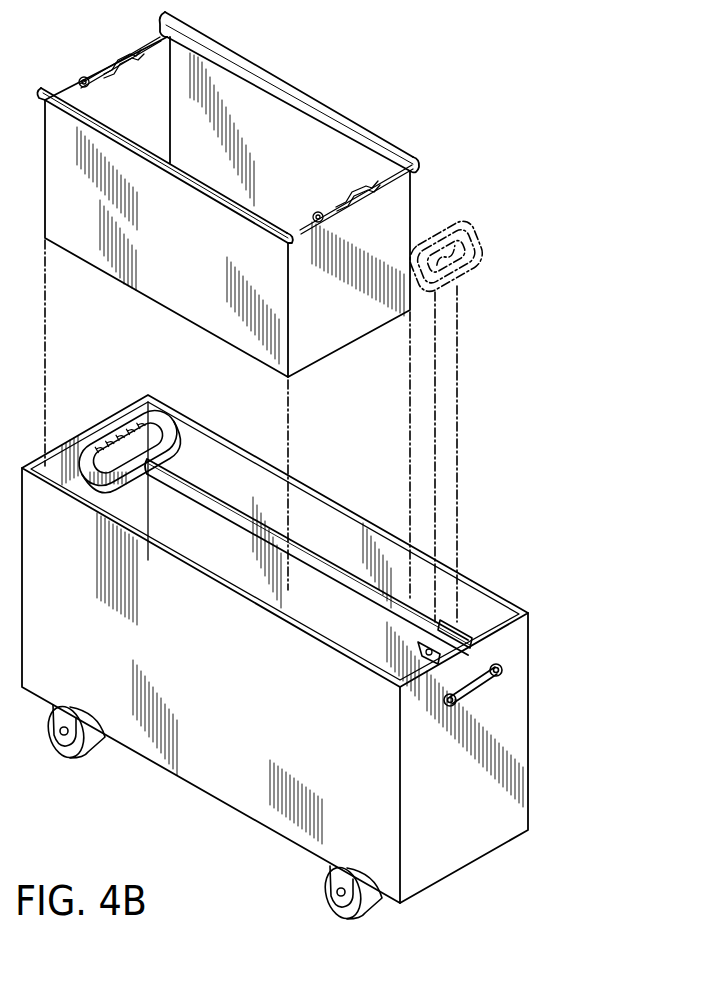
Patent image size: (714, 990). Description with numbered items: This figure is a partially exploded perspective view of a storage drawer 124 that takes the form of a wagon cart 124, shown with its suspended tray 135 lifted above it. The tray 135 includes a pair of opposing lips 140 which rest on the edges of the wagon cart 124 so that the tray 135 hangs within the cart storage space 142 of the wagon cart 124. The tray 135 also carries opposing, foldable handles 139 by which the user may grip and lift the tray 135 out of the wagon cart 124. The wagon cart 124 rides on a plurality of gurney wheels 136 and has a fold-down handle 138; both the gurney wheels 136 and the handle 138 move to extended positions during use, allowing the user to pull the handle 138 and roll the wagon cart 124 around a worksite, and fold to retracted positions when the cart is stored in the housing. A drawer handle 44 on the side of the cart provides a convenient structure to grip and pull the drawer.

The storage drawer 124 is at (603, 191).
The suspended tray 135 is at (303, 85).
The gurney wheels 136 is at (70, 763).
The fold-down handle 138 is at (302, 550).
The foldable handles 139 is at (123, 72).
The opposing lips 140 is at (112, 128).
The cart storage space 142 is at (144, 473).
The drawer handle 44 is at (497, 688).